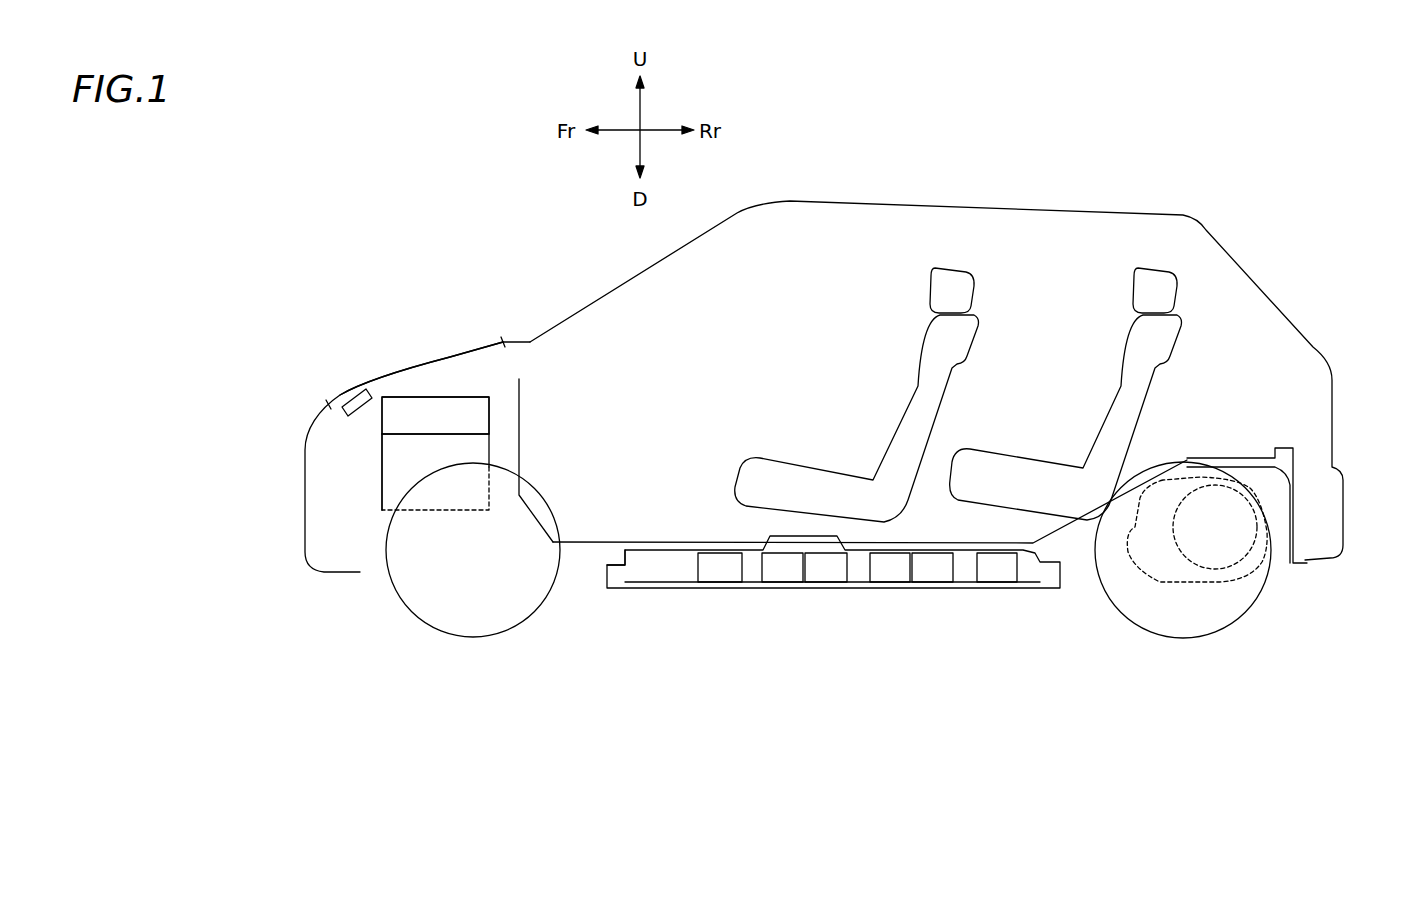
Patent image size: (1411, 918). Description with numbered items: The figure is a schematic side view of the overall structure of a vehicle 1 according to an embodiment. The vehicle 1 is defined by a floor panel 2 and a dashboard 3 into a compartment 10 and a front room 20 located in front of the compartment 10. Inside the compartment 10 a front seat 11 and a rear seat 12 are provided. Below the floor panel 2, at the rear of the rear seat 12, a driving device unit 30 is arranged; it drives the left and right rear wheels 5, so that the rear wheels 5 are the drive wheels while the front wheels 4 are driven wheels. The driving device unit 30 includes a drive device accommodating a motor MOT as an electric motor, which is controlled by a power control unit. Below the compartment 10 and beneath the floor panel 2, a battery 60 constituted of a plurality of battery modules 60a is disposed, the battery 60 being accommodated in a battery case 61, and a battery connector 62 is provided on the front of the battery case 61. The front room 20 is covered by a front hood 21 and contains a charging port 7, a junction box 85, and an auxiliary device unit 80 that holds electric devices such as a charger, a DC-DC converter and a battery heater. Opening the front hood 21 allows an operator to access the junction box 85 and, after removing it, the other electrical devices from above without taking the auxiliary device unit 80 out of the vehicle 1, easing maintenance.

The vehicle 1 is at (518, 210).
The floor panel 2 is at (612, 540).
The dashboard 3 is at (521, 410).
The front wheel 4 is at (548, 600).
The rear wheel 5 is at (1253, 597).
The charging port 7 is at (358, 384).
The compartment 10 is at (826, 302).
The front seat 11 is at (912, 380).
The rear seat 12 is at (1118, 378).
The front room 20 is at (481, 384).
The front hood 21 is at (448, 357).
The driving device unit 30 is at (1282, 538).
The battery 60 is at (698, 567).
The battery module 60a is at (928, 570).
The battery case 61 is at (963, 585).
The battery connector 62 is at (605, 578).
The auxiliary device unit 80 is at (398, 467).
The junction box 85 is at (408, 407).
The motor MOT is at (1222, 568).